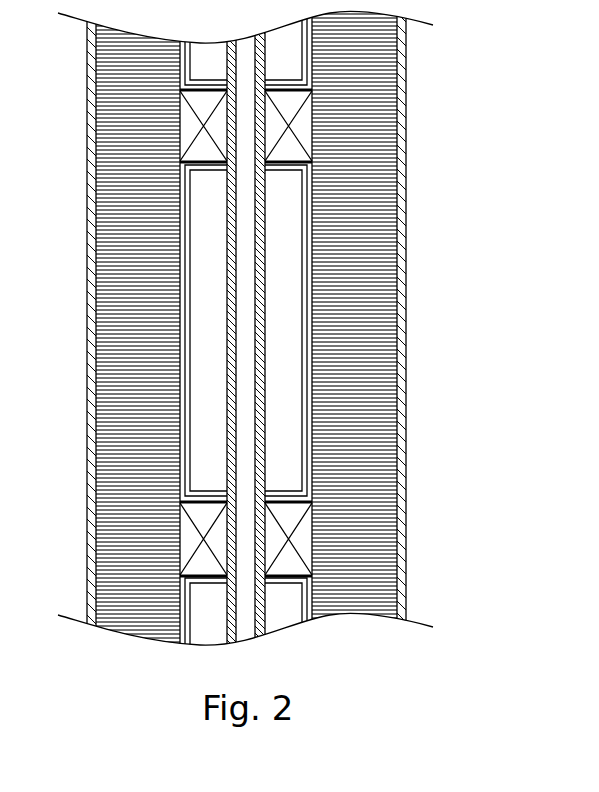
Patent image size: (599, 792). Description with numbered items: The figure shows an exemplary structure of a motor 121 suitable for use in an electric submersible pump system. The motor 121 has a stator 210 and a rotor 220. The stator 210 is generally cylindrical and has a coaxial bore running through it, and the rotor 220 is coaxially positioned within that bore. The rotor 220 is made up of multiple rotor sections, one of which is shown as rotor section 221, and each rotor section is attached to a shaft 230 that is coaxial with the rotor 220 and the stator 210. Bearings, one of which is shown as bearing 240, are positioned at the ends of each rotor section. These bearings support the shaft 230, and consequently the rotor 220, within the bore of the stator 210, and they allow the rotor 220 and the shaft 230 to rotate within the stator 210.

The motor 121 is at (445, 211).
The stator 210 is at (401, 85).
The rotor 220 is at (305, 310).
The rotor section 221 is at (172, 170).
The shaft 230 is at (267, 620).
The bearing 240 is at (312, 133).